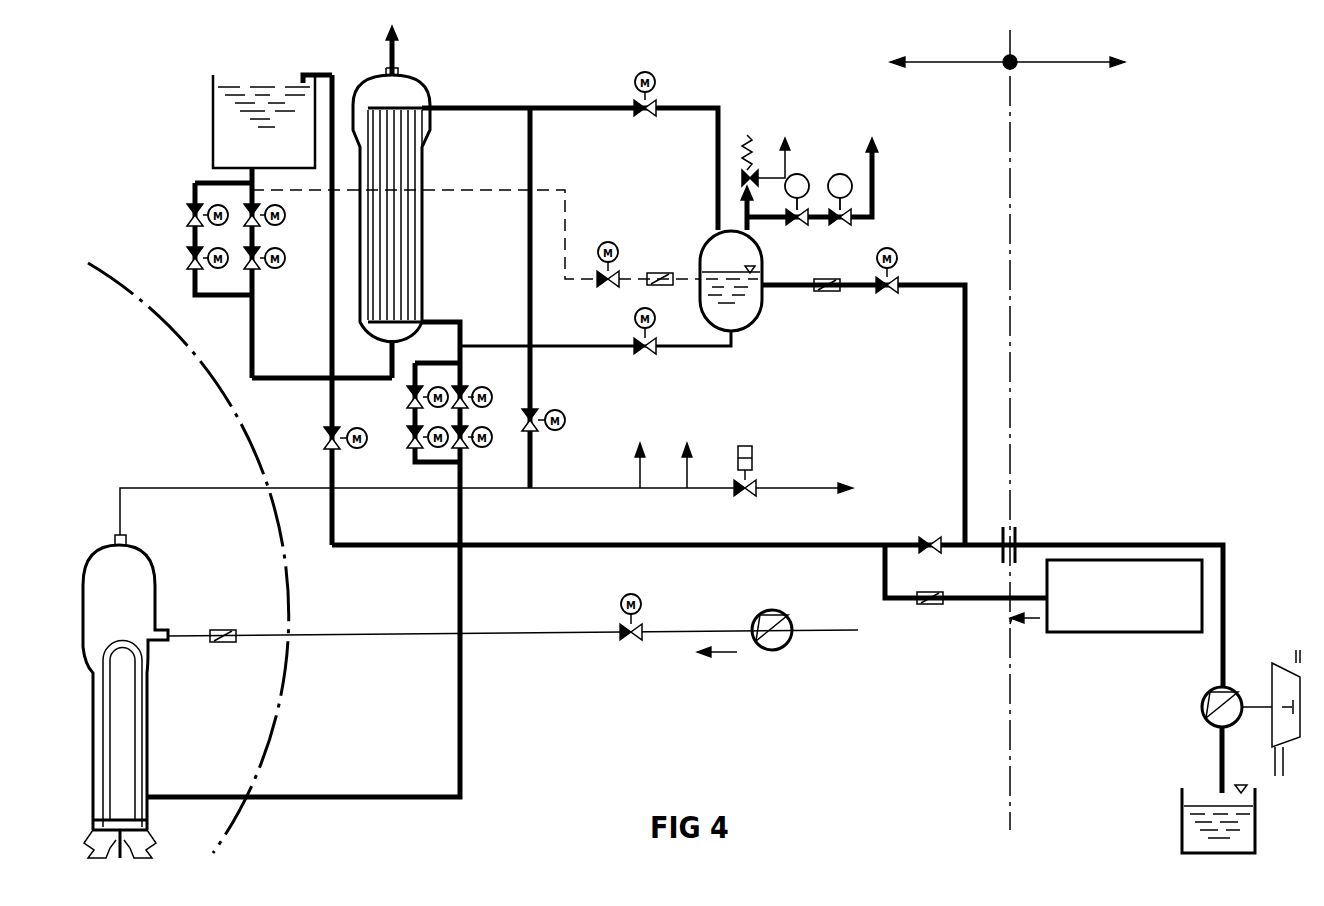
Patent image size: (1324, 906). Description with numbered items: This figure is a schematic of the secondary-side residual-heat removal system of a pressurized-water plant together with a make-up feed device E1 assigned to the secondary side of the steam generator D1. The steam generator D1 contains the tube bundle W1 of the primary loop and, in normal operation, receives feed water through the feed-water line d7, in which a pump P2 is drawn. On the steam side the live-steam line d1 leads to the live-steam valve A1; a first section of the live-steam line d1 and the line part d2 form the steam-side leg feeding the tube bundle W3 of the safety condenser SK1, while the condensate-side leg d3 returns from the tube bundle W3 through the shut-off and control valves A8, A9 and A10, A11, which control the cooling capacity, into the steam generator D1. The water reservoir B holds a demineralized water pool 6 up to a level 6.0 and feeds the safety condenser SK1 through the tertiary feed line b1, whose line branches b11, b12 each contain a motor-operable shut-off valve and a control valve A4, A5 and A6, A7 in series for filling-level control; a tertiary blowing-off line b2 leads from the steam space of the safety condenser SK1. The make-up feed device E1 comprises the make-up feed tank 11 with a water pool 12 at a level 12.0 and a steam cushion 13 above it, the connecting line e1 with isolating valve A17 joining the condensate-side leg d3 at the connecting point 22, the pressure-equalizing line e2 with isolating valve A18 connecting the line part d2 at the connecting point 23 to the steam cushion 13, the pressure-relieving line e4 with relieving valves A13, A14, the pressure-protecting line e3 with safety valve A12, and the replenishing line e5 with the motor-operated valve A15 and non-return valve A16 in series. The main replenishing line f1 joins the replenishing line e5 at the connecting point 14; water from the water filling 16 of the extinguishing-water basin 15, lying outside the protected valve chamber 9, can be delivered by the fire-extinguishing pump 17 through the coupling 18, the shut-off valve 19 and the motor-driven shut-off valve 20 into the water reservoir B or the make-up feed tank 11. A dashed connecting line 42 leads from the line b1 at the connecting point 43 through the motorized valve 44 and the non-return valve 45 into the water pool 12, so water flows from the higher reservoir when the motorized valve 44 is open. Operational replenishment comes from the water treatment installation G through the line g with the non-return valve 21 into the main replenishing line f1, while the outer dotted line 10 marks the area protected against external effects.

The water reservoir B is at (213, 106).
The demineralized water pool 6 is at (252, 95).
The level 6.0 is at (283, 86).
The connecting point 43 is at (252, 168).
The motor-operable shut-off valve A4 is at (188, 216).
The control valve A5 is at (188, 262).
The motor-operable shut-off valve A6 is at (258, 222).
The control valve A7 is at (258, 266).
The tertiary feed line b1 is at (250, 172).
The line branch b11 is at (195, 290).
The line branch b12 is at (255, 295).
The tertiary blowing-off line b2 is at (388, 55).
The safety condenser SK1 is at (478, 229).
The tube bundle W3 is at (422, 168).
The line part d2 is at (446, 108).
The connecting point 23 is at (530, 108).
The isolating valve A18 is at (636, 106).
The pressure-equalizing line e2 is at (670, 103).
The connecting line 42 is at (562, 185).
The motorized valve 44 is at (600, 272).
The non-return valve 45 is at (654, 272).
The make-up feed device E1 is at (706, 228).
The steam cushion 13 is at (706, 262).
The make-up feed tank 11 is at (748, 232).
The water pool 12 is at (712, 300).
The level 12.0 is at (755, 272).
The safety valve A12 is at (752, 170).
The pressure-protecting line e3 is at (787, 158).
The pressure-relieving line e4 is at (874, 162).
The relieving valve A13 is at (802, 222).
The relieving valve A14 is at (852, 222).
The non-return valve A16 is at (828, 292).
The motor-operated valve A15 is at (890, 292).
The replenishing line e5 is at (964, 400).
The connecting point 22 is at (462, 346).
The isolating valve A17 is at (642, 354).
The connecting line e1 is at (708, 348).
The line part d3 is at (462, 318).
The shut-off valve A8 is at (409, 398).
The control valve A9 is at (410, 444).
The shut-off valve A10 is at (463, 388).
The control valve A11 is at (463, 445).
The motor-driven shut-off valve 20 is at (325, 440).
The live-steam line d1 is at (168, 488).
The live-steam valve A1 is at (752, 450).
The main replenishing line f1 is at (400, 548).
The shut-off valve 19 is at (928, 537).
The connecting point 14 is at (966, 540).
The coupling 18 is at (1020, 528).
The non-return valve 21 is at (928, 605).
The line g is at (965, 604).
The water treatment installation G is at (1080, 633).
The fire-extinguishing pump 17 is at (1228, 690).
The extinguishing-water basin 15 is at (1183, 815).
The water filling 16 is at (1242, 816).
The steam generator D1 is at (156, 598).
The tube bundle W1 is at (143, 718).
The feed-water line d7 is at (492, 632).
The pump P2 is at (776, 612).
The outer dotted line 10 is at (1011, 196).
The valve chamber 9 is at (852, 70).